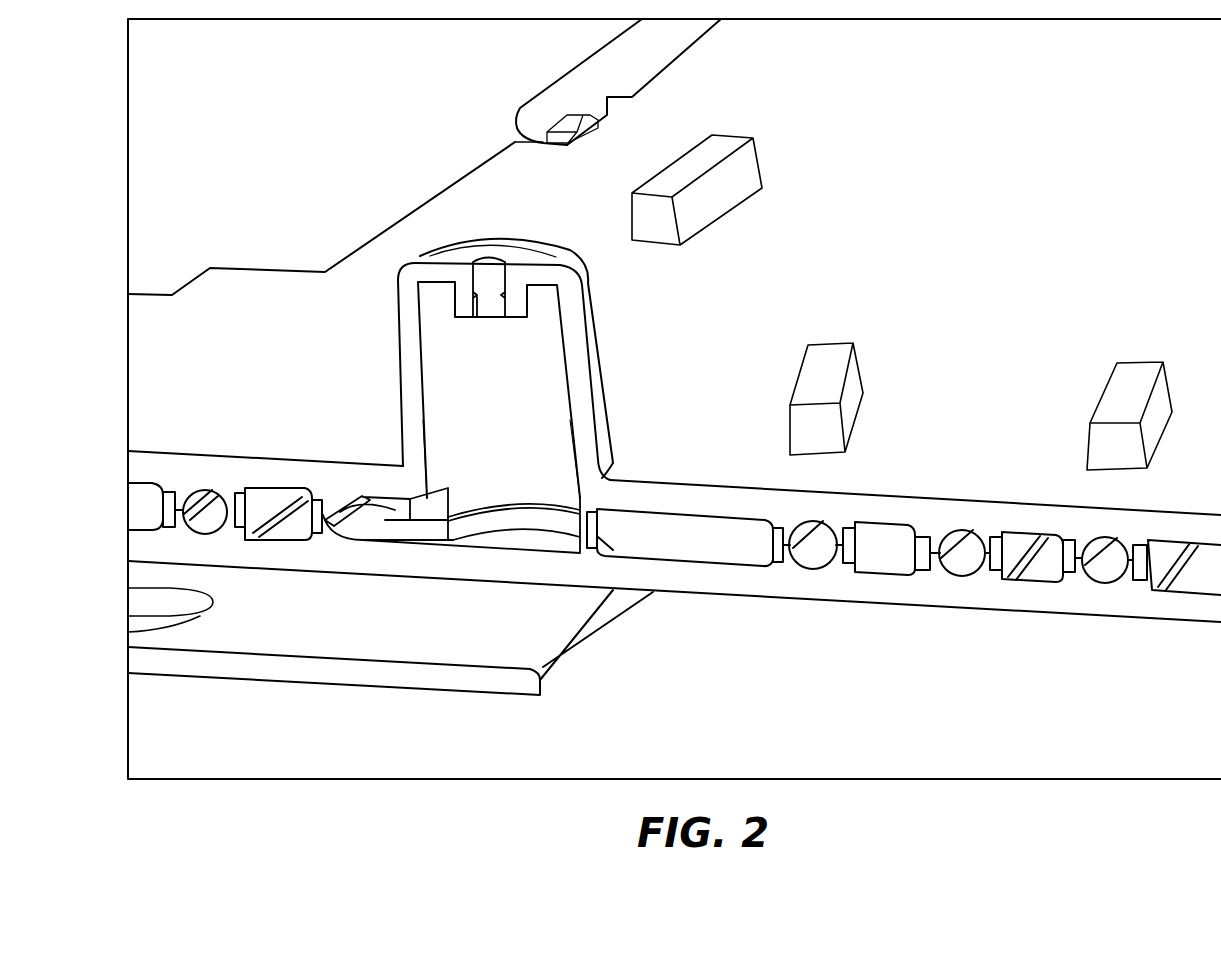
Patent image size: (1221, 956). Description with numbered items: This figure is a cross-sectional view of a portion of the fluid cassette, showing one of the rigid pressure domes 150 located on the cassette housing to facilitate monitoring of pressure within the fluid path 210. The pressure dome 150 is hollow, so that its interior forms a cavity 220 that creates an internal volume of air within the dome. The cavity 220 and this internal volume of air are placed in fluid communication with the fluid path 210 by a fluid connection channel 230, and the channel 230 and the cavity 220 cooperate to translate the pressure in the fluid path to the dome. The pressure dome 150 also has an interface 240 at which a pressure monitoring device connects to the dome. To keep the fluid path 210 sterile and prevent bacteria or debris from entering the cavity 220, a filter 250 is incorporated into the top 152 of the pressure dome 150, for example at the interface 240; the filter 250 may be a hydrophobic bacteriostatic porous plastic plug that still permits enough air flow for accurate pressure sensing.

The pressure dome 150 is at (454, 317).
The top of the pressure dome 152 is at (507, 245).
The interface 240 is at (453, 252).
The filter 250 is at (485, 302).
The cavity 220 is at (495, 400).
The fluid path 210 is at (353, 518).
The fluid connection channel 230 is at (432, 540).